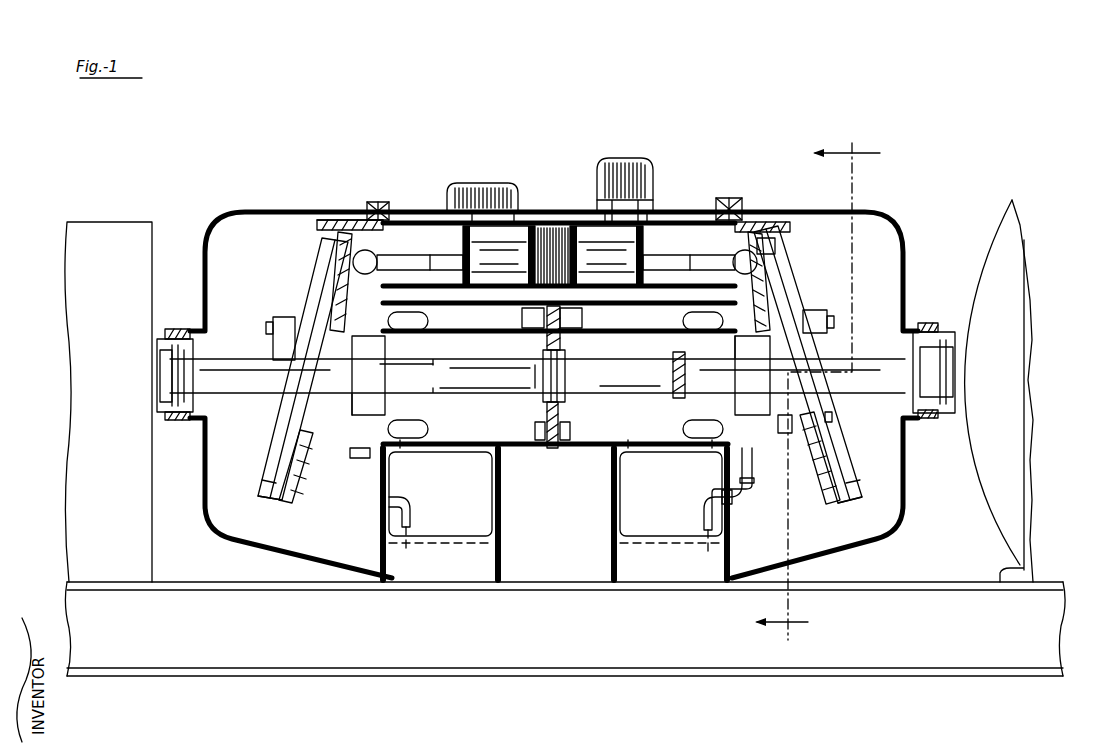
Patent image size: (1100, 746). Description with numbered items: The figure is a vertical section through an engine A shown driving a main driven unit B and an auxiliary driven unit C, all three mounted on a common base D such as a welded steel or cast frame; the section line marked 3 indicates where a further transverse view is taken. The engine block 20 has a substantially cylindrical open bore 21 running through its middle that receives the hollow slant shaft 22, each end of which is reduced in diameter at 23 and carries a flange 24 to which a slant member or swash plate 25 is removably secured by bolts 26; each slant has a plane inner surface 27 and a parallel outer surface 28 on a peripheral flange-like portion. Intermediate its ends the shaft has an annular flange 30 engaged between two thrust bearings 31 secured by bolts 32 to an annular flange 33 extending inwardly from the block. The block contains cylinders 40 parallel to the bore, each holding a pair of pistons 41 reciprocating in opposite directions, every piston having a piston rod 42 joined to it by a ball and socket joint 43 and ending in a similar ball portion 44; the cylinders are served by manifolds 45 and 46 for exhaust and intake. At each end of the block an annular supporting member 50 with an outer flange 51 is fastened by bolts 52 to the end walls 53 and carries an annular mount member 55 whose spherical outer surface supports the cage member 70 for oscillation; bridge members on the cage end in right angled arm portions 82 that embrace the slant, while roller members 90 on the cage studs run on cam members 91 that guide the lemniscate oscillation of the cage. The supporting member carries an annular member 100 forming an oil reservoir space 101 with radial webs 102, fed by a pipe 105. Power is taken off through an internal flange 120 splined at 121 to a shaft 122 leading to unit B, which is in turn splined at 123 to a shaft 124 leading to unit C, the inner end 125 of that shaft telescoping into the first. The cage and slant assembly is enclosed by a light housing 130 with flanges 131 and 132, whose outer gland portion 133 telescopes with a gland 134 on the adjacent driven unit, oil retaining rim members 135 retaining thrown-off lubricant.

The engine block 20 is at (582, 510).
The open bore 21 is at (506, 431).
The slant shaft 22 is at (634, 450).
The reduced-diameter end 23 is at (376, 397).
The flange 24 is at (280, 318).
The slant member 25 is at (316, 293).
The bolts 26 is at (266, 329).
The inner surface 27 is at (276, 506).
The outer surface 28 is at (258, 495).
The annular flange 30 is at (570, 432).
The thrust bearings 31 is at (540, 316).
The bolts 32 is at (527, 434).
The annular flange 33 is at (559, 450).
The cylinders 40 is at (526, 221).
The pistons 41 is at (522, 221).
The piston rod 42 is at (438, 257).
The ball and socket joint 43 is at (352, 260).
The ball portion 44 is at (735, 264).
The manifold 45 is at (624, 158).
The manifold 46 is at (468, 184).
The annular supporting member 50 is at (774, 463).
The outer flange 51 is at (724, 490).
The bolts 52 is at (358, 458).
The end walls 53 is at (386, 528).
The annular mount member 55 is at (790, 434).
The cage member 70 is at (302, 470).
The right angled arm portion 82 is at (775, 245).
The roller member 90 is at (355, 236).
The cam members 91 is at (333, 220).
The annular member 100 is at (690, 318).
The annular space 101 is at (680, 337).
The radial webs 102 is at (401, 450).
The pipe 105 is at (755, 482).
The internal flange 120 is at (562, 345).
The splined connection 121 is at (542, 353).
The shaft 122 is at (700, 391).
The splined connection 123 is at (545, 394).
The shaft 124 is at (396, 363).
The inner end 125 is at (486, 386).
The housing 130 is at (904, 248).
The flange 131 is at (736, 200).
The flange 132 is at (720, 200).
The gland portion 133 is at (197, 425).
The gland 134 is at (175, 422).
The oil retaining rim members 135 is at (172, 328).
The section line 3 is at (824, 391).
The engine A is at (310, 203).
The main driven unit B is at (1033, 233).
The auxiliary driven unit C is at (52, 288).
The common base D is at (524, 694).